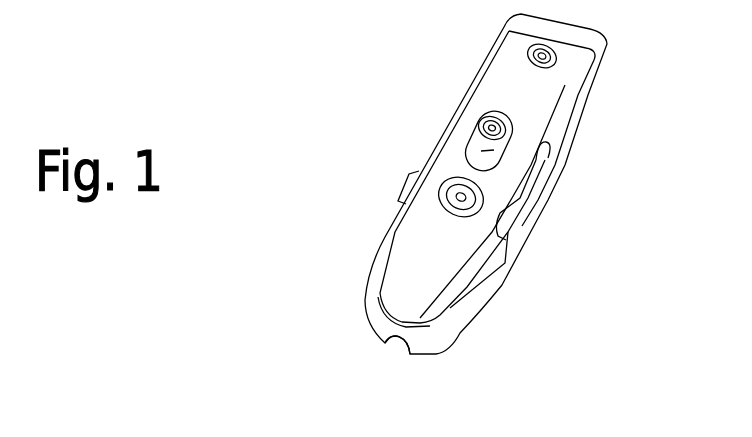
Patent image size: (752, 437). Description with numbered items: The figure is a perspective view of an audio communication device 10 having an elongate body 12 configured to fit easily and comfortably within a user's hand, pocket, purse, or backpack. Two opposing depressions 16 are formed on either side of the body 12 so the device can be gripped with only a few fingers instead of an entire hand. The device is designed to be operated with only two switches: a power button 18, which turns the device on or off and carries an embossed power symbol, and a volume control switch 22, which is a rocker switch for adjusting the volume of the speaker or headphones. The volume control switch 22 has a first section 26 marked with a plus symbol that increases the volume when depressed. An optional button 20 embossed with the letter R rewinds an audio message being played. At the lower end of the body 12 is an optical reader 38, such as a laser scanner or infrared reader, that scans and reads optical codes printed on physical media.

The audio communication device 10 is at (297, 102).
The elongate body 12 is at (572, 125).
The opposing depressions 16 is at (538, 195).
The power button 18 is at (548, 55).
The optional button 20 is at (459, 197).
The volume control switch 22 is at (492, 145).
The first section 26 is at (496, 130).
The optical reader 38 is at (394, 340).